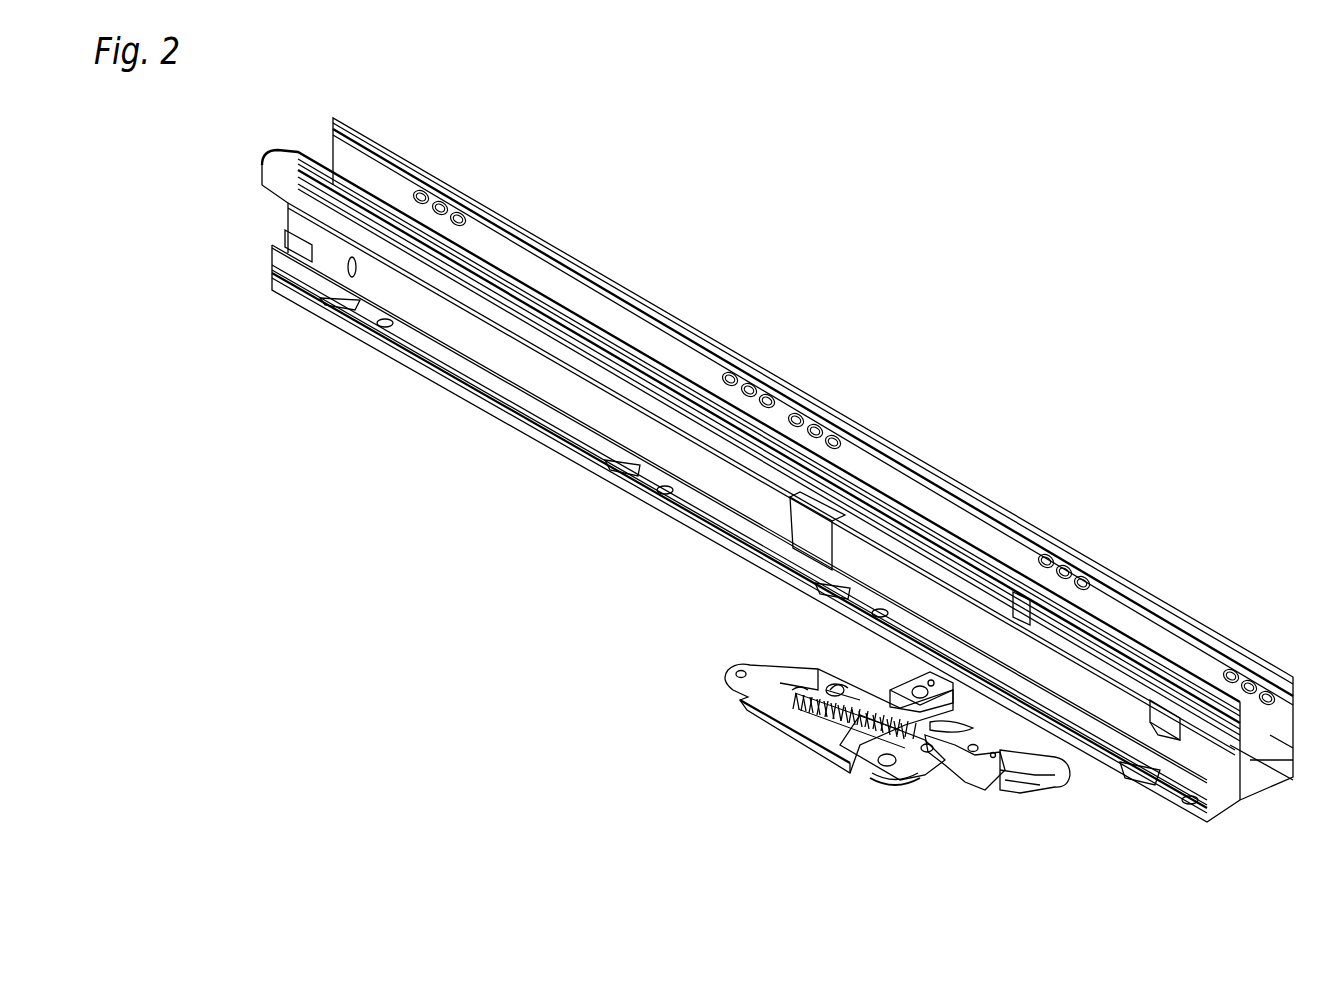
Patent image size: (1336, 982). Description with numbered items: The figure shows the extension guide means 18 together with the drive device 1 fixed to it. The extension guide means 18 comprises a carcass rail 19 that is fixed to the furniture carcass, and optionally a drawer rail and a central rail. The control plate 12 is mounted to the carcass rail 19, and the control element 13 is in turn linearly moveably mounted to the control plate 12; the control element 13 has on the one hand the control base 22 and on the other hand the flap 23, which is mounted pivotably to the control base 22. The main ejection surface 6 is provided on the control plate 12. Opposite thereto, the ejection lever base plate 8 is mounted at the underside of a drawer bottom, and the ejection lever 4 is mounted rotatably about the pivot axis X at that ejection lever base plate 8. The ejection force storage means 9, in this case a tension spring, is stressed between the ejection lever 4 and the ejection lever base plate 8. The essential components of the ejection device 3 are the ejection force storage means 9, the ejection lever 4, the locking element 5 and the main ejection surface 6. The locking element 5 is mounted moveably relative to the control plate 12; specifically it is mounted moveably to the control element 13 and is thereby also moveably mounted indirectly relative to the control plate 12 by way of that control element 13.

The drive device 1 is at (702, 794).
The ejection device 3 is at (640, 530).
The ejection lever 4 is at (760, 665).
The locking element 5 is at (850, 690).
The main ejection surface 6 is at (820, 665).
The ejection lever base plate 8 is at (828, 730).
The ejection force storage means 9 is at (793, 702).
The control plate 12 is at (1047, 740).
The control element 13 is at (1095, 850).
The extension guide means 18 is at (956, 303).
The carcass rail 19 is at (935, 508).
The control base 22 is at (957, 742).
The flap 23 is at (1038, 763).
The pivot axis X is at (857, 730).